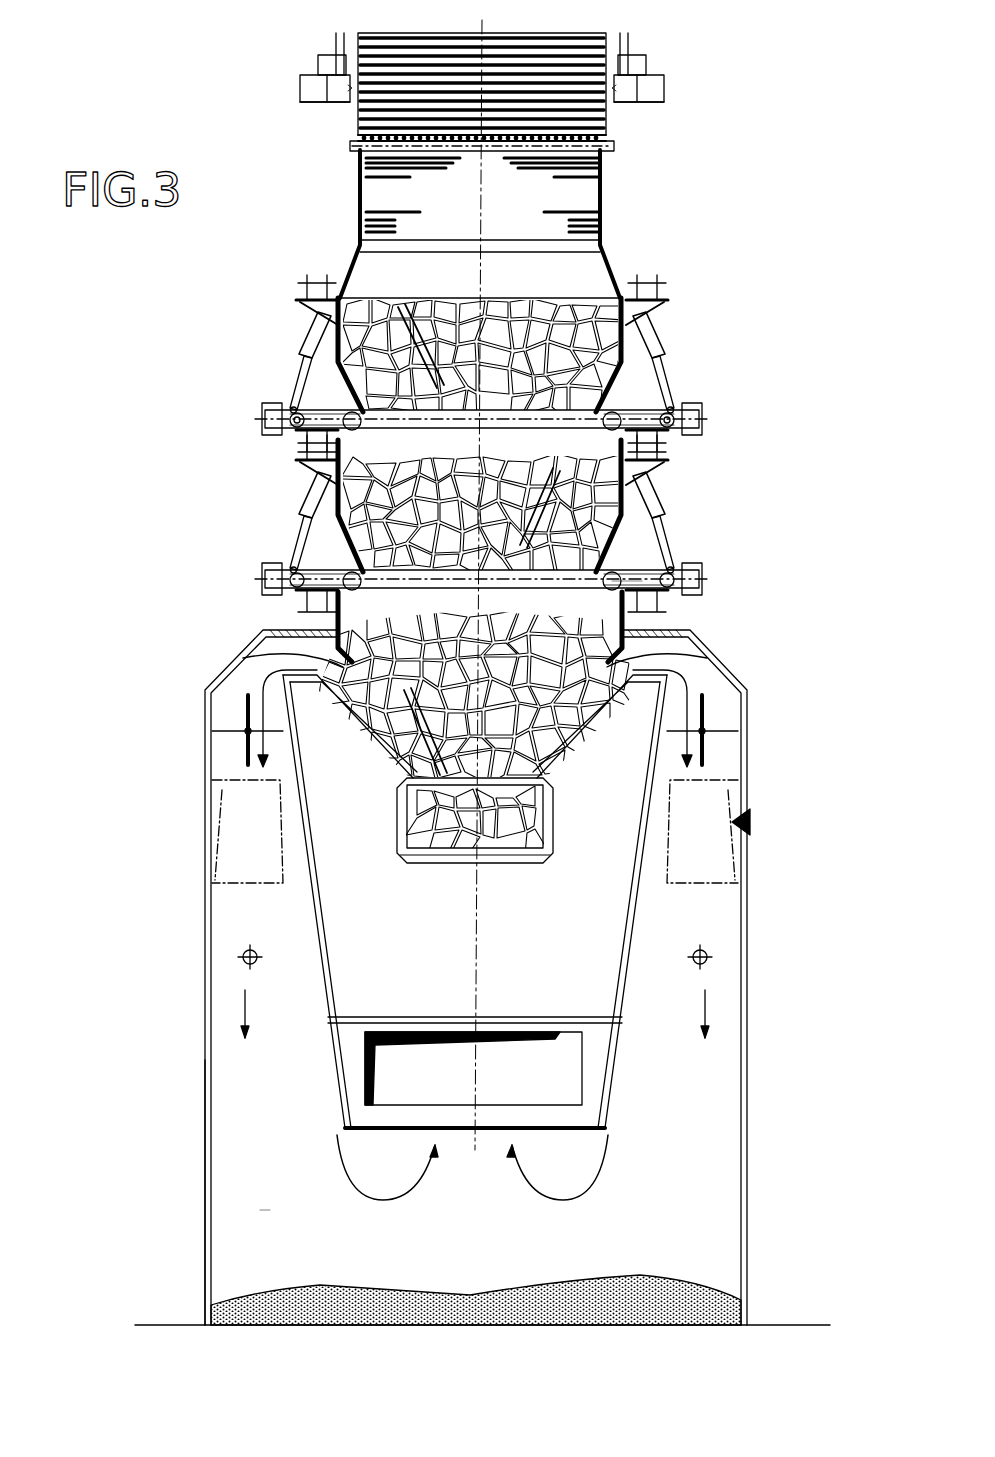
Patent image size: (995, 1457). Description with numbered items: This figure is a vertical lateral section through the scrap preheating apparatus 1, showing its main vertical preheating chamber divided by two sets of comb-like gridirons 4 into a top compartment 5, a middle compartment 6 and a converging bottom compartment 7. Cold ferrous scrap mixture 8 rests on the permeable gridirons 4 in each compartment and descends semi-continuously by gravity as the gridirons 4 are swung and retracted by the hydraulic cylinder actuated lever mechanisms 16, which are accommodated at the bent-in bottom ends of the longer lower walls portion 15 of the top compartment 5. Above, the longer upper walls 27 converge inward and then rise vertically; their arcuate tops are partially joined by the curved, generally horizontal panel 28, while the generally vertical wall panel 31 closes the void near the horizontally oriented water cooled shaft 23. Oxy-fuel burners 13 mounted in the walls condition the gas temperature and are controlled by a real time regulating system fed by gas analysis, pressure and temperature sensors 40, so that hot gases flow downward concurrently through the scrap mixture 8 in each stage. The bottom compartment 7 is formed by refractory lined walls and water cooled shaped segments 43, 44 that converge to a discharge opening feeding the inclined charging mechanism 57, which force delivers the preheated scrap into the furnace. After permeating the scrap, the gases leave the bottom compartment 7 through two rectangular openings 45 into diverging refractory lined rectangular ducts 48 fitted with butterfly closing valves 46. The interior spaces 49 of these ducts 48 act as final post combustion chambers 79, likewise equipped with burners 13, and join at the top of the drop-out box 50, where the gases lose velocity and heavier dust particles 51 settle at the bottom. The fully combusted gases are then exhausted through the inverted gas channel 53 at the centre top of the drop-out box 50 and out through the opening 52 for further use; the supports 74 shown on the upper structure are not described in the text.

The scrap preheating apparatus 1 is at (332, 266).
The gridirons 4 is at (398, 428).
The top compartment 5 is at (598, 272).
The middle compartment 6 is at (627, 470).
The bottom compartment 7 is at (642, 628).
The ferrous scrap mixture 8 is at (432, 292).
The oxy-fuel burners 13 is at (258, 957).
The longer lower walls portion 15 is at (350, 410).
The hydraulic cylinder actuated lever mechanisms 16 is at (662, 345).
The horizontally oriented water cooled shaft 23 is at (350, 158).
The longer upper walls 27 is at (358, 238).
The curved, generally horizontal panel 28 is at (445, 37).
The generally vertical wall panel 31 is at (362, 122).
The gas analysis, pressure and temperature sensors 40 is at (750, 828).
The water cooled shaped segment 43 is at (285, 632).
The water cooled shaped segment 44 is at (377, 745).
The rectangular openings 45 is at (243, 658).
The butterfly closing valves 46 is at (246, 728).
The refractory lined rectangular ducts 48 is at (208, 765).
The interior spaces of ducts 49 is at (222, 942).
The drop-out box 50 is at (715, 1208).
The heavier dust particles 51 is at (745, 1300).
The opening 52 is at (610, 1082).
The inverted gas channel 53 is at (342, 1100).
The inclined charging mechanism 57 is at (397, 825).
The support 74 is at (340, 40).
The final post combustion chambers 79 is at (215, 1070).